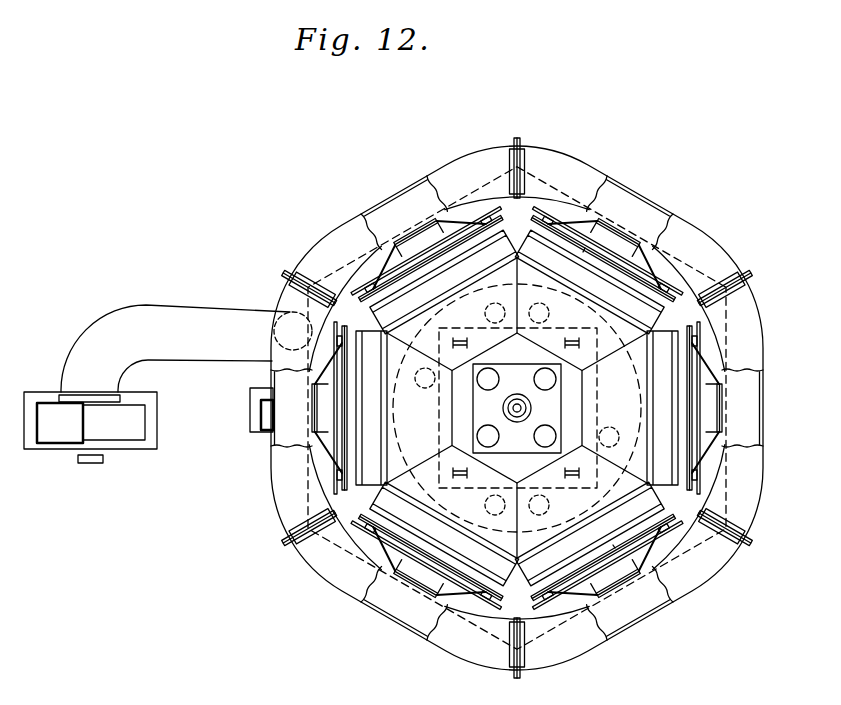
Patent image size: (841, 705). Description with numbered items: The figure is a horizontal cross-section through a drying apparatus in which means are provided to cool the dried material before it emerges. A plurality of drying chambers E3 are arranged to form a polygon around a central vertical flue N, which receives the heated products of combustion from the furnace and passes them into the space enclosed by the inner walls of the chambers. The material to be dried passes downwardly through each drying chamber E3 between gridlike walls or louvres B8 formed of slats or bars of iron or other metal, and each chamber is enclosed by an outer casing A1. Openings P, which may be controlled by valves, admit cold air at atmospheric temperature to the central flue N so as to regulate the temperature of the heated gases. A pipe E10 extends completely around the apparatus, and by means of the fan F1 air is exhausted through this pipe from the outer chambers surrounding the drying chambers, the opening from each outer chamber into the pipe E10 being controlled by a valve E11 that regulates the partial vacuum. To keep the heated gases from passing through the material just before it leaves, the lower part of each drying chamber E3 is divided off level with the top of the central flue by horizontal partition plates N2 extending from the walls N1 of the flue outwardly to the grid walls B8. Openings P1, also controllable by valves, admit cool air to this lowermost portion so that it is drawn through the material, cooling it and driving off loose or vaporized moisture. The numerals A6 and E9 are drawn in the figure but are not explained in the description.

The pipe E10 is at (285, 502).
The drying chamber E3 is at (517, 408).
The bracket arm A6 is at (587, 573).
The gridlike wall B8 is at (448, 592).
The mounting plate E9 is at (613, 545).
The outer casing A1 is at (400, 548).
The valve E11 is at (318, 420).
The fan F1 is at (53, 417).
The central vertical flue N is at (517, 408).
The opening P is at (516, 407).
The wall of the central flue N1 is at (530, 408).
The partition plate N2 is at (517, 408).
The opening P1 is at (517, 409).